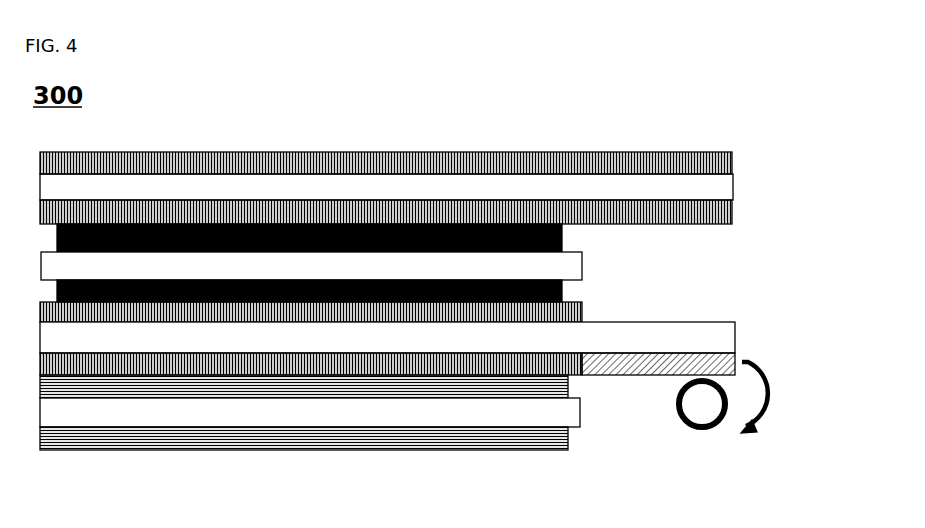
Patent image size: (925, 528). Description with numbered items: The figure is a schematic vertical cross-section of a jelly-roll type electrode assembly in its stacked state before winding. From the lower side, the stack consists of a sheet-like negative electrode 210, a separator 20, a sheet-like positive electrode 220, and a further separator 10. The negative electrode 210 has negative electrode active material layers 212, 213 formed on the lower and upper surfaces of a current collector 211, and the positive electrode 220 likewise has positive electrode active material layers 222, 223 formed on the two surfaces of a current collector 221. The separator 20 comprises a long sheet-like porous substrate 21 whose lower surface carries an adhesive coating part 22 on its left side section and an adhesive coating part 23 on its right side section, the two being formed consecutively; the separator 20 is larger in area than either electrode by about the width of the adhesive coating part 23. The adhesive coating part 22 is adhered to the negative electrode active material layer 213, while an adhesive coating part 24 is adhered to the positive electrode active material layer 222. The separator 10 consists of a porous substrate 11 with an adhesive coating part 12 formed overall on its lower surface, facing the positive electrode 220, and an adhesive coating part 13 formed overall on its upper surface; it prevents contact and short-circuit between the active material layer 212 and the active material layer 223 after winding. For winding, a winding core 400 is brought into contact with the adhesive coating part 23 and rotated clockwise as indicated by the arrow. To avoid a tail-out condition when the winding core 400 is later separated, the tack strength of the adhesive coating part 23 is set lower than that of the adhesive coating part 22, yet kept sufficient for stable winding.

The separator 10 is at (437, 192).
The porous substrate 11 is at (386, 187).
The adhesive coating part 12 is at (673, 208).
The adhesive coating part 13 is at (673, 160).
The separator 20 is at (438, 394).
The porous substrate 21 is at (387, 337).
The adhesive coating part 22 is at (572, 370).
The adhesive coating part 23 is at (610, 360).
The adhesive coating part 24 is at (572, 313).
The negative electrode 210 is at (357, 434).
The current collector 211 is at (310, 412).
The negative electrode active material layer 212 is at (304, 438).
The negative electrode active material layer 213 is at (304, 386).
The positive electrode 220 is at (368, 263).
The current collector 221 is at (311, 266).
The positive electrode active material layer 222 is at (309, 291).
The positive electrode active material layer 223 is at (309, 238).
The winding core 400 is at (713, 428).